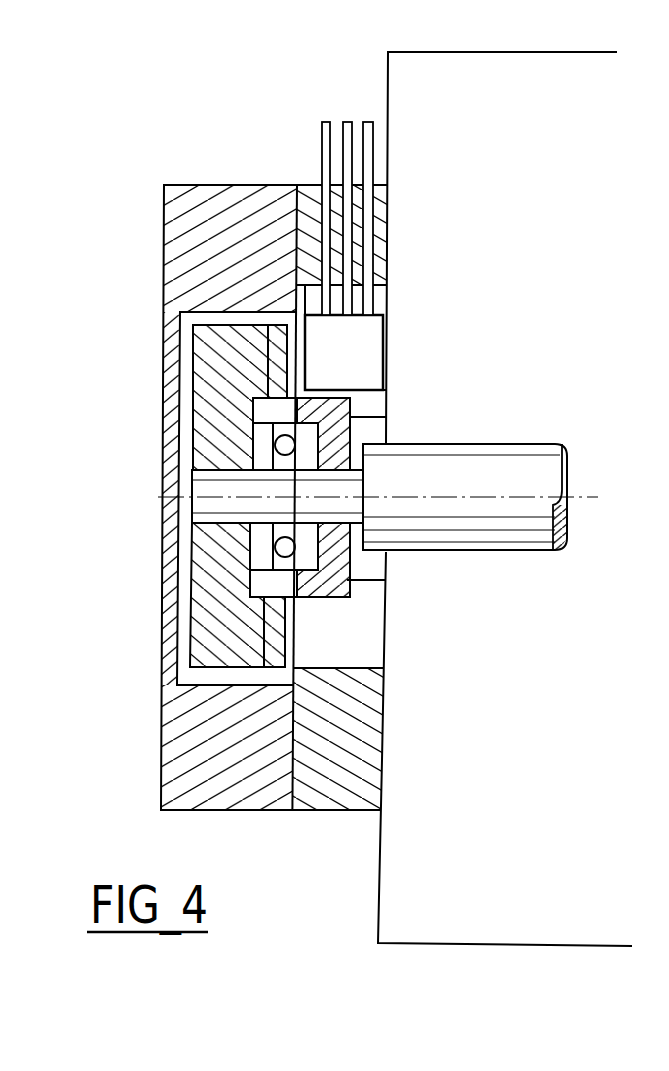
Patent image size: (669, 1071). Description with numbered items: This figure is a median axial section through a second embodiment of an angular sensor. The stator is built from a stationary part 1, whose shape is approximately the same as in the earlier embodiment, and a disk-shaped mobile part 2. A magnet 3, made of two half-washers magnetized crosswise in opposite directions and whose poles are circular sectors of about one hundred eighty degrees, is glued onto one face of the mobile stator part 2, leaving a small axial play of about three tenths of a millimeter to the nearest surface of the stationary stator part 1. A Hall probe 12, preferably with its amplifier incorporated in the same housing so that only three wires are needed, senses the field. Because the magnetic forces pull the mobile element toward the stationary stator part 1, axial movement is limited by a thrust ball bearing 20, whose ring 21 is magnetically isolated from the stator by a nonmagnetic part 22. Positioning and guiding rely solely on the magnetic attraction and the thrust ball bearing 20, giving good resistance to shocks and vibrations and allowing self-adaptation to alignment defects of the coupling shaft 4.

The stationary stator part 1 is at (368, 403).
The mobile stator part 2 is at (227, 640).
The magnet 3 is at (293, 646).
The coupling shaft 4 is at (523, 468).
The Hall probe 12 is at (353, 333).
The thrust ball bearing 20 is at (262, 550).
The ring 21 is at (307, 437).
The nonmagnetic part 22 is at (307, 395).